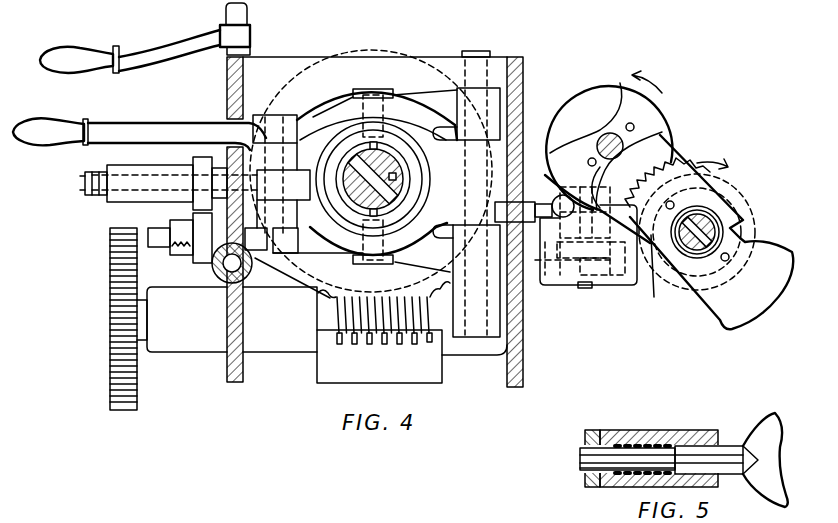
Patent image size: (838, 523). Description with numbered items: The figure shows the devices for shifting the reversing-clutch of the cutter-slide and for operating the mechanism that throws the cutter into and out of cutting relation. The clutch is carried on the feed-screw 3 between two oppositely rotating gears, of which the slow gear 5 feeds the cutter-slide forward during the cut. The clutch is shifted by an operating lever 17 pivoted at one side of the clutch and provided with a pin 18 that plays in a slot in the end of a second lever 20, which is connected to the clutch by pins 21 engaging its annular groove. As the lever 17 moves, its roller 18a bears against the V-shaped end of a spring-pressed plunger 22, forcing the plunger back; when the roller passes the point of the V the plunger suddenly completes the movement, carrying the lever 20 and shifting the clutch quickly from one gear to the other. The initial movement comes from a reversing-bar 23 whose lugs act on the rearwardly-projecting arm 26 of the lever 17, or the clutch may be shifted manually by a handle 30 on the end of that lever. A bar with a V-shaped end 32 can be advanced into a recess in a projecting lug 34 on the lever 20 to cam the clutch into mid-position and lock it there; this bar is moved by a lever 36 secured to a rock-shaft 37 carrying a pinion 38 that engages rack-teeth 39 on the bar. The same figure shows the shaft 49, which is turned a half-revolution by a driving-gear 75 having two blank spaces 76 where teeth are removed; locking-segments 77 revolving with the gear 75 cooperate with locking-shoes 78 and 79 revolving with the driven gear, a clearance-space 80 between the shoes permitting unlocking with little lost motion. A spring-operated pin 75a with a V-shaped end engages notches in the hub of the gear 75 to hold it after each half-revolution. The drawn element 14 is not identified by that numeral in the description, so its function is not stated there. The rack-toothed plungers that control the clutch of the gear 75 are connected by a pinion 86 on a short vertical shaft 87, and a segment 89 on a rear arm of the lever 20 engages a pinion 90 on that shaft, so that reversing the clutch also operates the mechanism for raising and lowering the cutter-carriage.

In FIG. 4, the feed-screw 3 is at (403, 165).
In FIG. 4, the gear 5 is at (271, 110).
In FIG. 4, the ratchet wheel 14 is at (568, 104).
In FIG. 4, the lever 17 is at (384, 128).
In FIG. 4, the pin 18 is at (285, 118).
In FIG. 4, the roller 18a is at (288, 178).
In FIG. 4, the lever 20 is at (386, 198).
In FIG. 4, the pins 21 is at (376, 96).
In FIG. 4, the spring-pressed plunger 22 is at (160, 176).
In FIG. 4, the reversing-bar 23 is at (556, 200).
In FIG. 4, the rearwardly-projecting arm 26 is at (523, 212).
In FIG. 4, the handle 30 is at (47, 128).
In FIG. 4, the V-shaped end 32 is at (275, 260).
In FIG. 4, the projecting lug 34 is at (298, 241).
In FIG. 4, the lever 36 is at (128, 56).
In FIG. 4, the rock-shaft 37 is at (250, 268).
In FIG. 4, the pinion 38 is at (208, 273).
In FIG. 4, the rack-teeth 39 is at (177, 253).
In FIG. 4, the shaft 49 is at (597, 141).
In FIG. 4, the driving-gear 75 is at (737, 188).
In FIG. 4, the spring-operated pin 75a is at (666, 273).
In FIG. 5, the spring-operated pin 75a is at (712, 440).
In FIG. 4, the blank spaces 76 is at (680, 160).
In FIG. 4, the locking-segments 77 is at (694, 230).
In FIG. 4, the locking-shoe 78 is at (657, 91).
In FIG. 4, the locking-shoe 79 is at (607, 210).
In FIG. 4, the clearance-space 80 is at (601, 181).
In FIG. 4, the pinion 86 is at (562, 233).
In FIG. 4, the short vertical shaft 87 is at (584, 287).
In FIG. 4, the segment 89 is at (553, 286).
In FIG. 4, the pinion 90 is at (613, 286).